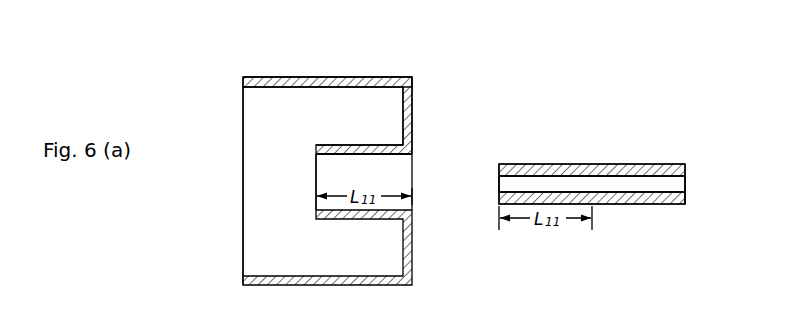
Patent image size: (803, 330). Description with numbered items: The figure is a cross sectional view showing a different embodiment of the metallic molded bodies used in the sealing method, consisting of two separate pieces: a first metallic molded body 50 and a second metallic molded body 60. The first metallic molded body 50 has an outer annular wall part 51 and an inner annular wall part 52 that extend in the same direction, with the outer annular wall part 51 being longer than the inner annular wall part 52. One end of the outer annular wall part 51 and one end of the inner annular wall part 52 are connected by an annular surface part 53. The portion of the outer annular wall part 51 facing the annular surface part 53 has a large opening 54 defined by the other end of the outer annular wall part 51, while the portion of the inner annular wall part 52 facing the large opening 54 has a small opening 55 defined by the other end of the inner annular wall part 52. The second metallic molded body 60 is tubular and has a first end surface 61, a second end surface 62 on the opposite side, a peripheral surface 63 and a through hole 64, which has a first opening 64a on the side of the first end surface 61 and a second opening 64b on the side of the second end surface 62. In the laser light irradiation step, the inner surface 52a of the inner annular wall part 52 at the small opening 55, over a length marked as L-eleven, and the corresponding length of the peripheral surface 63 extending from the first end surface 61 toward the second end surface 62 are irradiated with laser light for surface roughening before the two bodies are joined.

The first metallic molded body 50 is at (336, 62).
The outer annular wall part 51 is at (280, 77).
The inner annular wall part 52 is at (353, 145).
The inner surface 52a is at (359, 154).
The annular surface part 53 is at (412, 111).
The large opening 54 is at (243, 247).
The small opening 55 is at (316, 155).
The second metallic molded body 60 is at (587, 160).
The first end surface 61 is at (499, 197).
The second end surface 62 is at (685, 197).
The peripheral surface 63 is at (527, 164).
The through hole 64 is at (632, 186).
The first opening 64a is at (499, 182).
The second opening 64b is at (685, 184).